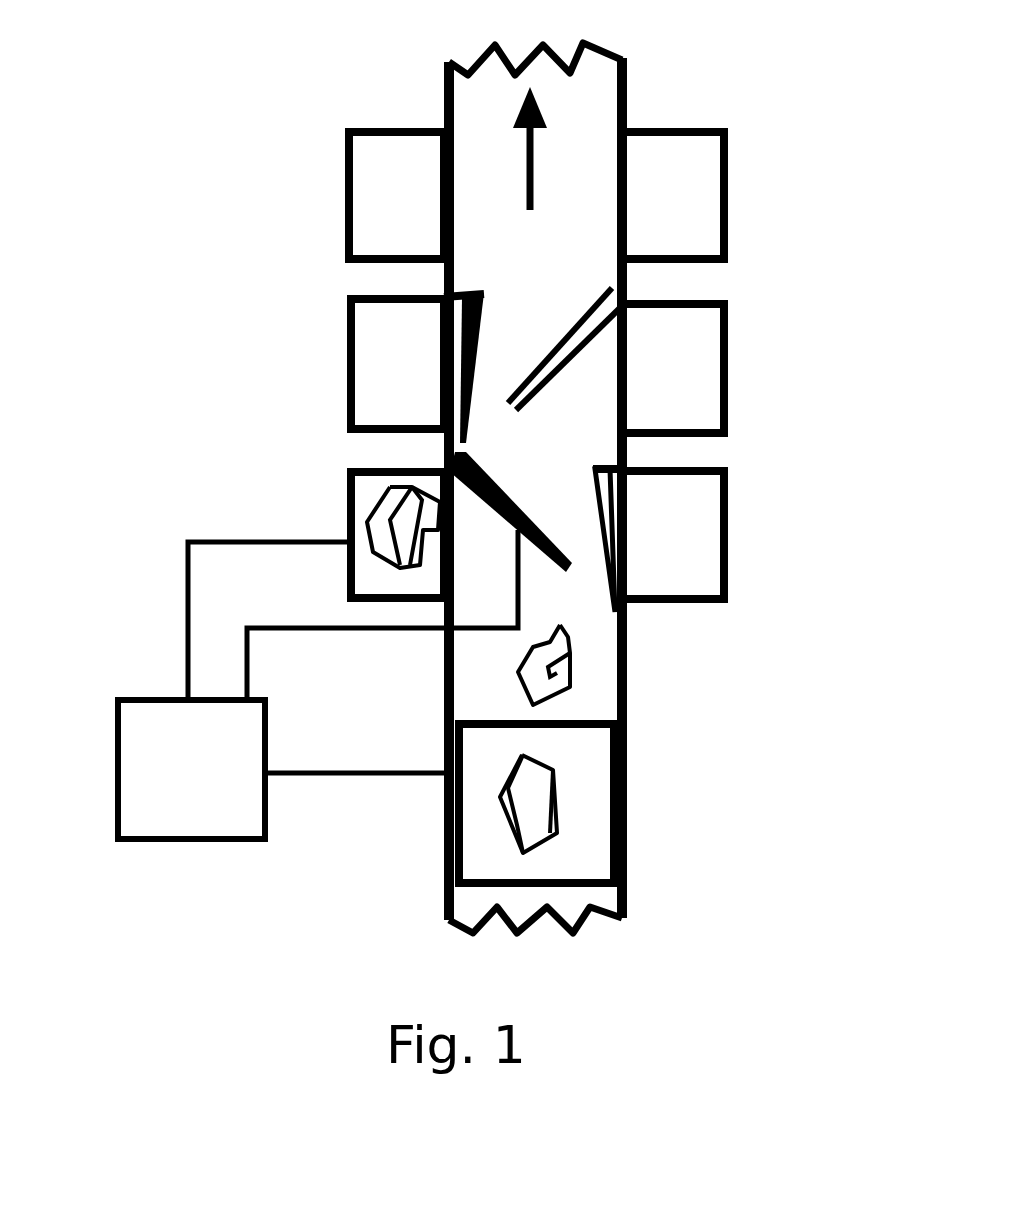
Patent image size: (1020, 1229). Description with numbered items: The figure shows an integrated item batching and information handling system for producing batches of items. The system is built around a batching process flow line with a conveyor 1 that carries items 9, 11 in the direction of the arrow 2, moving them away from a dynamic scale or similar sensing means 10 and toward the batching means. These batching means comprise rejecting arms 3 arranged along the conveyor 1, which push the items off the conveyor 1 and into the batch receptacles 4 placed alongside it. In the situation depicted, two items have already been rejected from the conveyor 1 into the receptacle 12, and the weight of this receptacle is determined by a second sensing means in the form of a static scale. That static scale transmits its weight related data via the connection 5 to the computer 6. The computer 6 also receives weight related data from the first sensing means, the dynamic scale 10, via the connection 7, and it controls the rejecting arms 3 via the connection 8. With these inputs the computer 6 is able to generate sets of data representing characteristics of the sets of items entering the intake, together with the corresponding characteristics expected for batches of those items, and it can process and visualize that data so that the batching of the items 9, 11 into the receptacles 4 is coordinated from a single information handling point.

The conveyor 1 is at (593, 100).
The arrow 2 is at (510, 125).
The rejecting arms 3 is at (448, 462).
The batch receptacles 4 is at (337, 322).
The connection 5 is at (185, 622).
The computer 6 is at (140, 775).
The connection 7 is at (317, 777).
The connection 8 is at (250, 653).
The item 9 is at (530, 823).
The dynamic scale 10 is at (590, 772).
The item 11 is at (570, 663).
The receptacle 12 is at (343, 477).